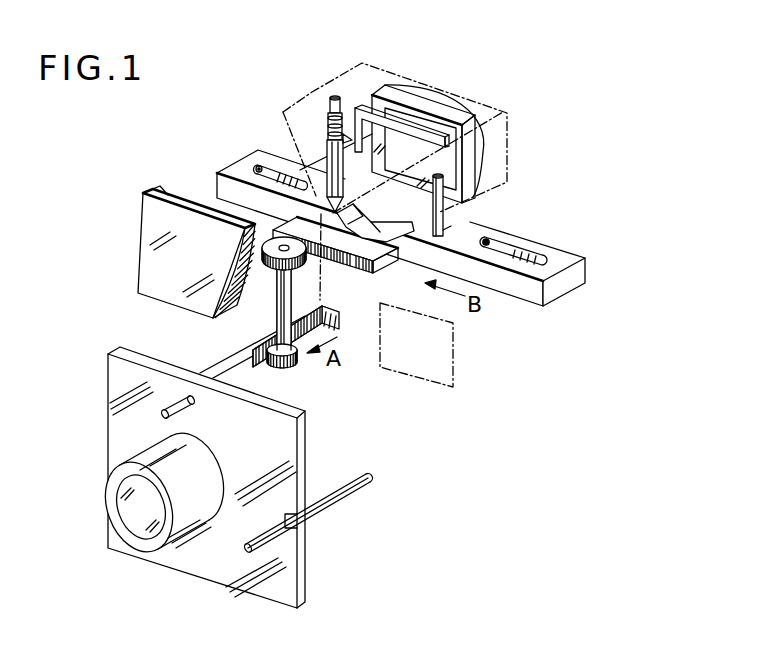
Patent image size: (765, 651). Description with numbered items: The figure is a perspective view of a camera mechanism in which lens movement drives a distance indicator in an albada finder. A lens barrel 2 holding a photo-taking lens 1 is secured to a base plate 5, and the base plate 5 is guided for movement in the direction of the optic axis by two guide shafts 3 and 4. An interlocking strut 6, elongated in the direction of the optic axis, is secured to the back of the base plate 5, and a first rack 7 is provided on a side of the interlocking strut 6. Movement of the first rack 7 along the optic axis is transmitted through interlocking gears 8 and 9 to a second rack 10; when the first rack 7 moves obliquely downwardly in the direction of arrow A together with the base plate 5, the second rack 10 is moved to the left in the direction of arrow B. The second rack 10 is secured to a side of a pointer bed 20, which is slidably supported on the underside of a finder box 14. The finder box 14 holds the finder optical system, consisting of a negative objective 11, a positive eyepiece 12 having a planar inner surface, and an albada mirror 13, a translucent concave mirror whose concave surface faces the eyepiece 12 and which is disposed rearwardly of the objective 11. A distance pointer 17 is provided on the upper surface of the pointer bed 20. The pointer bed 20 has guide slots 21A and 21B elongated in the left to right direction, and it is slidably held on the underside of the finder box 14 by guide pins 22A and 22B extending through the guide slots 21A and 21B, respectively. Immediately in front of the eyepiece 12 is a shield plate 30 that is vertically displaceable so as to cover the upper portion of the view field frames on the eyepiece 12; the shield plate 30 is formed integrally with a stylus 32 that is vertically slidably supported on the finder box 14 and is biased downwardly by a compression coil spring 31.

The photo-taking lens 1 is at (152, 527).
The lens barrel 2 is at (195, 518).
The guide shaft 3 is at (187, 412).
The guide shaft 4 is at (334, 507).
The base plate 5 is at (107, 368).
The interlocking strut 6 is at (222, 358).
The first rack 7 is at (338, 312).
The interlocking gear 8 is at (293, 368).
The interlocking gear 9 is at (277, 273).
The second rack 10 is at (345, 262).
The negative objective 11 is at (150, 225).
The positive eyepiece 12 is at (427, 98).
The albada mirror 13 is at (167, 190).
The finder box 14 is at (323, 86).
The distance pointer 17 is at (444, 192).
The pointer bed 20 is at (592, 271).
The guide slot 21A is at (533, 255).
The guide slot 21B is at (272, 169).
The guide pin 22A is at (486, 242).
The guide pin 22B is at (256, 167).
The shield plate 30 is at (427, 133).
The compression coil spring 31 is at (326, 118).
The stylus 32 is at (325, 138).